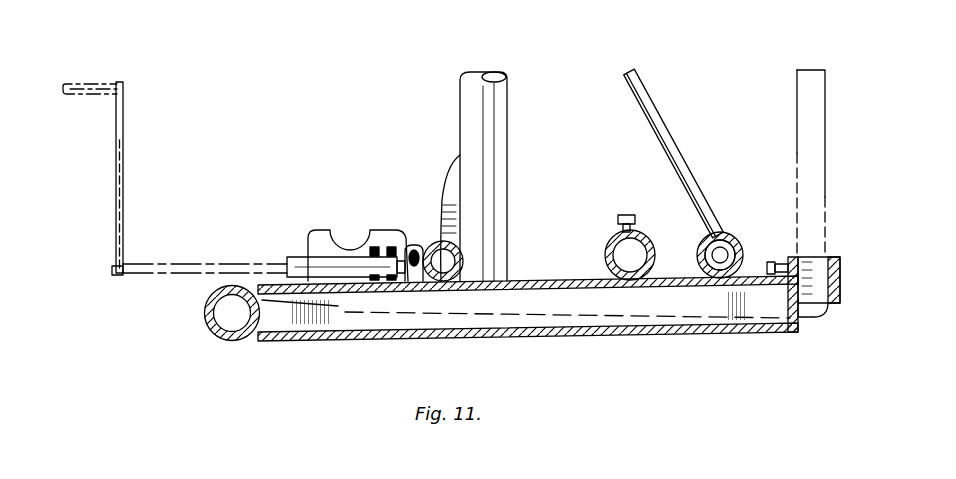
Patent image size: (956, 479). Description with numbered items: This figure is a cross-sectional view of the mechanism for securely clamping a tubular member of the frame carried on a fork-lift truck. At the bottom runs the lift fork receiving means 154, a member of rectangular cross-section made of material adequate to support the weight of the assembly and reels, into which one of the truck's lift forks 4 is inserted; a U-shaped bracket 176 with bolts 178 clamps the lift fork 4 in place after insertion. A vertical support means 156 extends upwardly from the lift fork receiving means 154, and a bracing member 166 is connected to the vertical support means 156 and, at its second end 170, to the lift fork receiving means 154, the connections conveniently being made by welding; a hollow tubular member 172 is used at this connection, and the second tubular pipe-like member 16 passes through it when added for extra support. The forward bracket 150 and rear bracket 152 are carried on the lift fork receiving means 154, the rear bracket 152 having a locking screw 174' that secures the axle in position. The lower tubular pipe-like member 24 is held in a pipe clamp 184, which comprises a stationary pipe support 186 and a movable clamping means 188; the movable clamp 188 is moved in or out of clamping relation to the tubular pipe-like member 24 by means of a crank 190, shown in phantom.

The lift fork 4 is at (807, 112).
The second tubular pipe-like member 16 is at (700, 237).
The lower tubular pipe-like member 24 is at (444, 283).
The forward bracket 150 is at (205, 322).
The rear bracket 152 is at (606, 237).
The lift fork receiving means 154 is at (706, 336).
The vertical support means 156 is at (476, 106).
The bracing member 166 is at (625, 80).
The second end 170 is at (718, 225).
The hollow tubular member 172 is at (735, 238).
The locking screw 174' is at (604, 203).
The U-shaped bracket 176 is at (840, 282).
The bolt 178 is at (790, 262).
The pipe clamp 184 is at (416, 212).
The stationary pipe support 186 is at (452, 176).
The movable clamping means 188 is at (410, 240).
The crank 190 is at (123, 178).